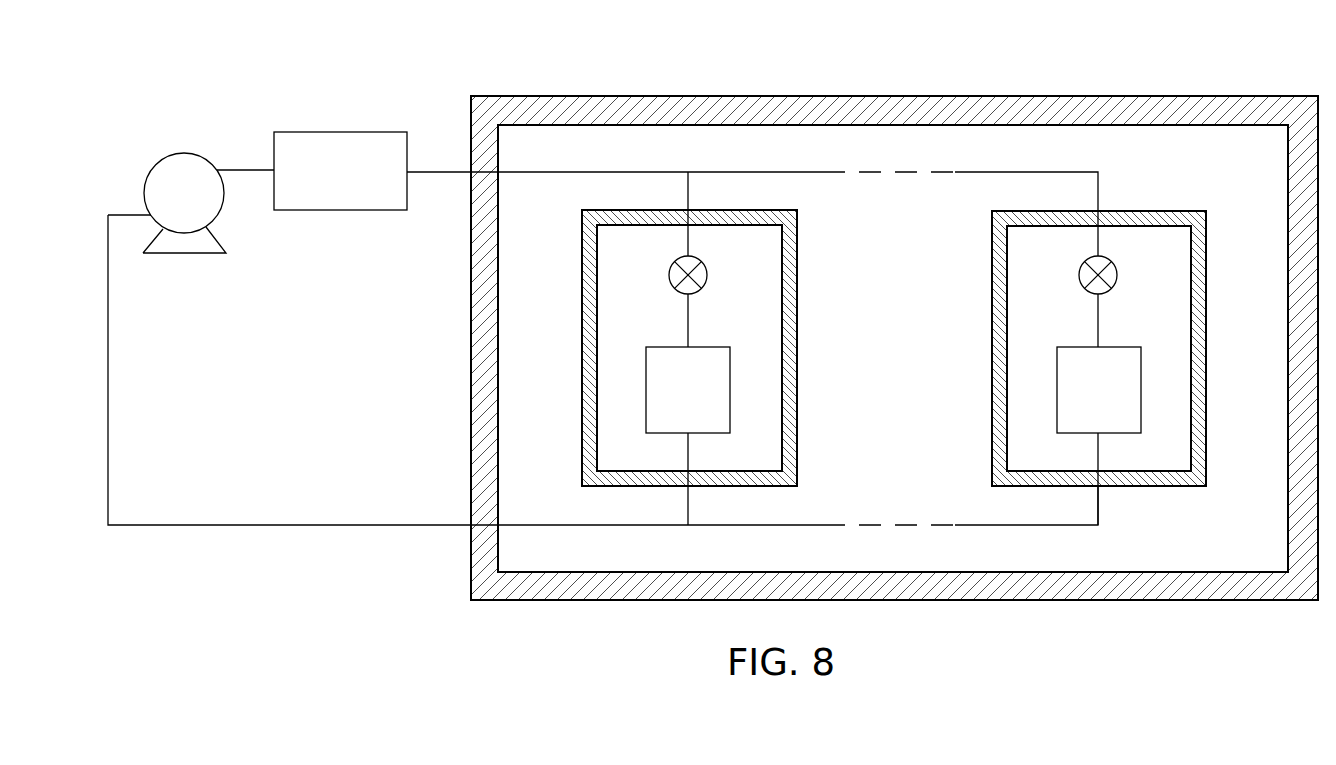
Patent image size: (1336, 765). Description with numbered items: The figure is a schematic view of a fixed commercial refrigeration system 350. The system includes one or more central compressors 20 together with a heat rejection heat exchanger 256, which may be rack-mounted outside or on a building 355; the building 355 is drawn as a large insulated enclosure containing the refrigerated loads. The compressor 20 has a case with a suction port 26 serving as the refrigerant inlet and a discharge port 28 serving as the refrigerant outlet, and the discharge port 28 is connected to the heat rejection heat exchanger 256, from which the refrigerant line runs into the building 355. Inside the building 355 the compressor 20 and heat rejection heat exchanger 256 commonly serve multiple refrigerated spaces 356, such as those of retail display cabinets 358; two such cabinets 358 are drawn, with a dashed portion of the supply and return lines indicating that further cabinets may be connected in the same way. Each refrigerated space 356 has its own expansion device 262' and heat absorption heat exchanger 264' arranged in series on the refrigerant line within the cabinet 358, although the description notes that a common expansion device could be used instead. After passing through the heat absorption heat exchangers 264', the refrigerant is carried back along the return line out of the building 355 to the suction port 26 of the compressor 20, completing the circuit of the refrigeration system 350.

The compressor 20 is at (184, 203).
The suction port 26 is at (150, 213).
The discharge port 28 is at (218, 168).
The heat rejection heat exchanger 256 is at (340, 171).
The fixed commercial refrigeration system 350 is at (372, 624).
The building 355 is at (857, 617).
The refrigerated space 356 is at (894, 348).
The retail display cabinet 358 is at (800, 417).
The expansion device 262' is at (864, 296).
The heat absorption heat exchanger 264' is at (893, 390).